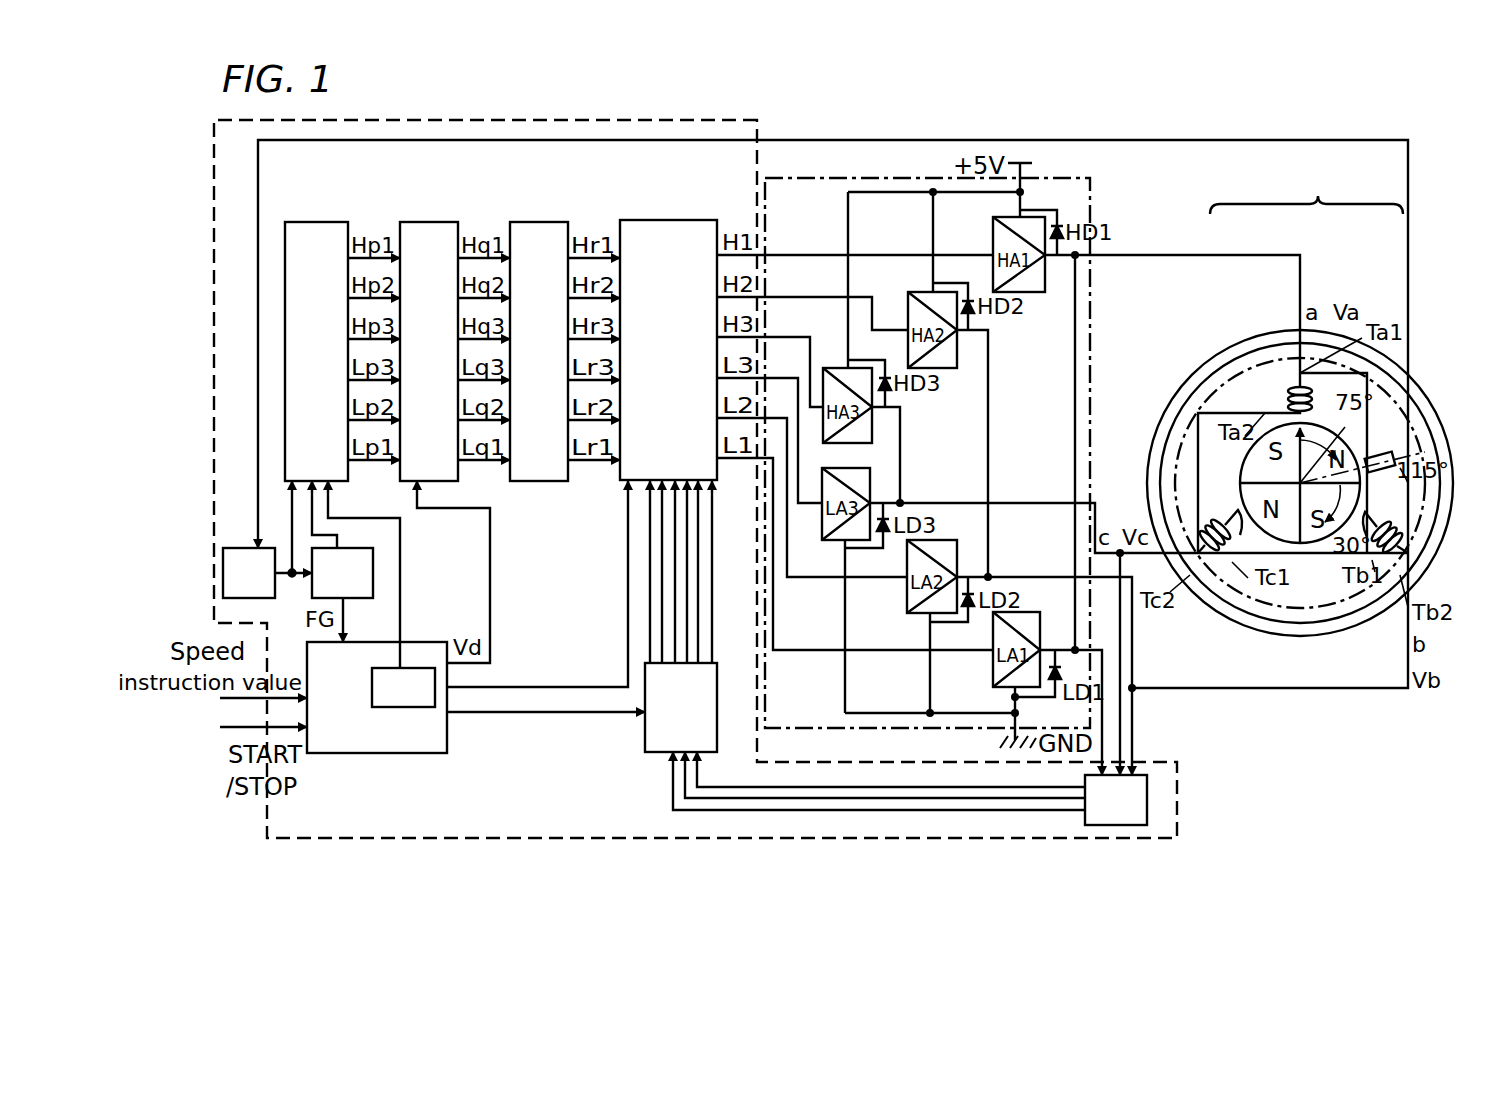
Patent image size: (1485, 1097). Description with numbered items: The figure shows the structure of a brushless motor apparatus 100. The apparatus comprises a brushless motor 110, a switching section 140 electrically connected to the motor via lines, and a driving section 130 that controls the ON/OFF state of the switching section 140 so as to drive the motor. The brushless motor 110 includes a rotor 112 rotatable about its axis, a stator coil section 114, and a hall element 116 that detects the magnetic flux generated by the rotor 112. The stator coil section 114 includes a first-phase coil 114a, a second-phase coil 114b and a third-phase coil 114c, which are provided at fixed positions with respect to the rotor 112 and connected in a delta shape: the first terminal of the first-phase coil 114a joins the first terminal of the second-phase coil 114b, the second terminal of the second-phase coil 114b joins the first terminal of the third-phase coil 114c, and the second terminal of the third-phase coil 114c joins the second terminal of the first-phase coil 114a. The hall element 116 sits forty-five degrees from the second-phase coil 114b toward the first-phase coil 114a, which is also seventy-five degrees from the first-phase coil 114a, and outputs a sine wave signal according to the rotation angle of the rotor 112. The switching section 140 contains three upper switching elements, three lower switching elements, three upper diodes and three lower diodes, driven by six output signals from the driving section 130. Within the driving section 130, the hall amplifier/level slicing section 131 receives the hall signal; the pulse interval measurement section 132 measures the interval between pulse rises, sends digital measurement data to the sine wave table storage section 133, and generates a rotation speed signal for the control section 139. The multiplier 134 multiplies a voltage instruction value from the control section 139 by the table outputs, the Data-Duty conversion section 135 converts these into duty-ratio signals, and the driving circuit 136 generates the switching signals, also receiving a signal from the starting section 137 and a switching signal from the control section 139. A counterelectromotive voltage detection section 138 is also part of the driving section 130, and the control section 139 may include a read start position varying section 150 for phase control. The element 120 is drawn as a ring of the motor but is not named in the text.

The brushless motor apparatus 100 is at (805, 908).
The brushless motor 110 is at (1316, 612).
The rotor 112 is at (1248, 465).
The stator coil section 114 is at (1303, 360).
The first-phase coil 114a is at (1290, 385).
The second-phase coil 114b is at (1395, 532).
The third-phase coil 114c is at (1205, 528).
The hall element 116 is at (1385, 455).
The stator 120 is at (1203, 610).
The driving section 130 is at (776, 122).
The hall amplifier/level slicing section 131 is at (250, 573).
The pulse interval measurement section 132 is at (342, 573).
The sine wave table storage section 133 is at (316, 351).
The multiplier 134 is at (429, 351).
The Data-Duty conversion section 135 is at (539, 351).
The driving circuit 136 is at (668, 350).
The starting section 137 is at (681, 707).
The counterelectromotive voltage detection section 138 is at (1116, 800).
The control section 139 is at (377, 697).
The switching section 140 is at (1093, 197).
The read start position varying section 150 is at (403, 687).